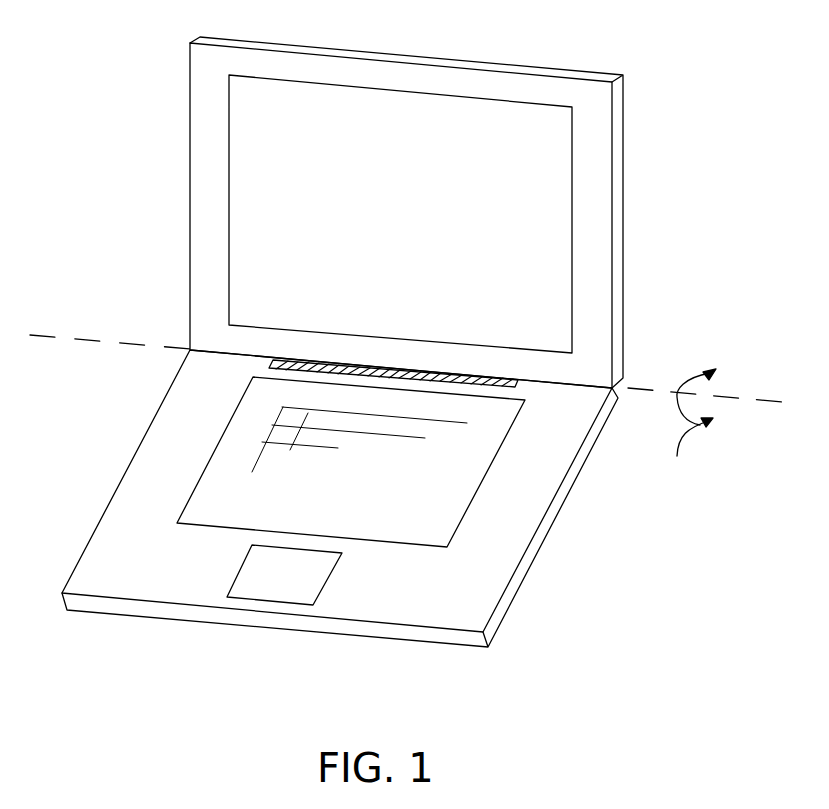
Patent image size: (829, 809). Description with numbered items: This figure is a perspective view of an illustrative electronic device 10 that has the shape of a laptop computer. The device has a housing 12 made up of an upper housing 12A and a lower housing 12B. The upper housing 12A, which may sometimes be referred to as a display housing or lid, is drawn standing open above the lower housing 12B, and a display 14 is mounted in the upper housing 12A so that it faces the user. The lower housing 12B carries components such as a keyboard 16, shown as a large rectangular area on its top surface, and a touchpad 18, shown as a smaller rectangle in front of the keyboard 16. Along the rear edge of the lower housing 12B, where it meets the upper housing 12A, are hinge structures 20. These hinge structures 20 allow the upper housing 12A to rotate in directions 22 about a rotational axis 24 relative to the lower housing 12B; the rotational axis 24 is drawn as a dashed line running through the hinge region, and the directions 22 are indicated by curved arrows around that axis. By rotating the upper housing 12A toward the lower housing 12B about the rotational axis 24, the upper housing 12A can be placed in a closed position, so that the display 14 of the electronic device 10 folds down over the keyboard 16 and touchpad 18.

The electronic device 10 is at (410, 363).
The housing 12 is at (370, 342).
The upper housing 12A is at (177, 45).
The lower housing 12B is at (170, 356).
The display 14 is at (537, 205).
The keyboard 16 is at (483, 480).
The touchpad 18 is at (325, 585).
The hinge structures 20 is at (498, 368).
The directions 22 is at (691, 428).
The rotational axis 24 is at (80, 337).